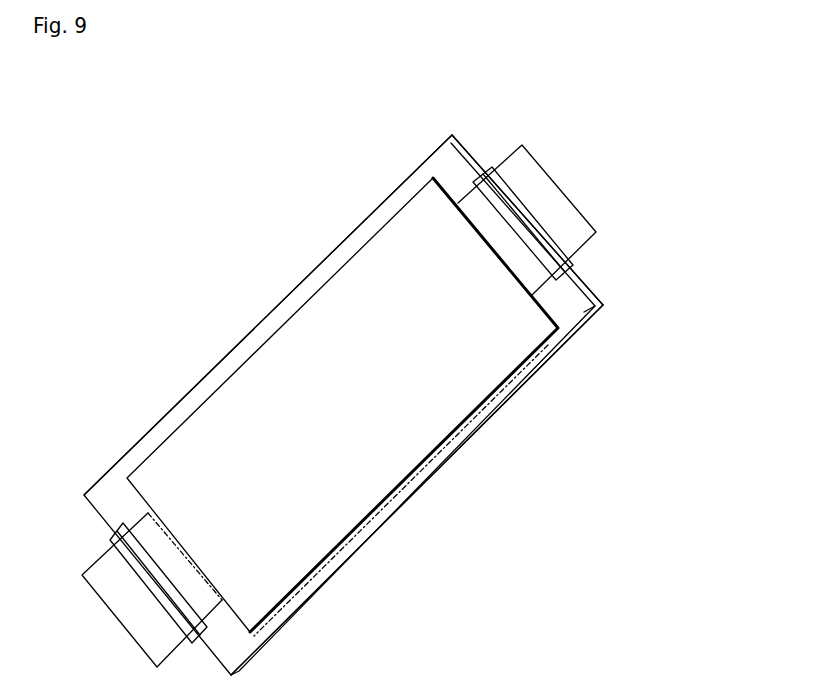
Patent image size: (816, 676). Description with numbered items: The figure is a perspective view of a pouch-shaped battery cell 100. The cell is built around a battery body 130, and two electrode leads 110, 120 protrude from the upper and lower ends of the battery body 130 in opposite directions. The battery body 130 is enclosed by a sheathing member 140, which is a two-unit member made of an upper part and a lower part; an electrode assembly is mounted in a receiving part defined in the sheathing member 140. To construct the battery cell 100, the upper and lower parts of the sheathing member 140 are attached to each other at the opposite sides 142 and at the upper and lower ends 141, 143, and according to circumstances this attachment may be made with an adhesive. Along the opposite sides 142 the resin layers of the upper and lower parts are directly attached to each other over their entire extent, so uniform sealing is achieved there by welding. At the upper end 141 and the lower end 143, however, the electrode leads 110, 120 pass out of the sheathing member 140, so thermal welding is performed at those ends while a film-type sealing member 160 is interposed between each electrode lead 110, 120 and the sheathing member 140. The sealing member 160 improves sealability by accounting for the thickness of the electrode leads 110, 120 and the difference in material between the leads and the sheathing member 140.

The pouch-shaped battery cell 100 is at (88, 136).
The electrode lead 110 is at (137, 620).
The electrode lead 120 is at (567, 178).
The battery body 130 is at (292, 343).
The sheathing member 140 is at (436, 146).
The upper end 141 is at (112, 490).
The opposite sides 142 is at (436, 470).
The lower end 143 is at (590, 300).
The film-type sealing member 160 is at (490, 160).